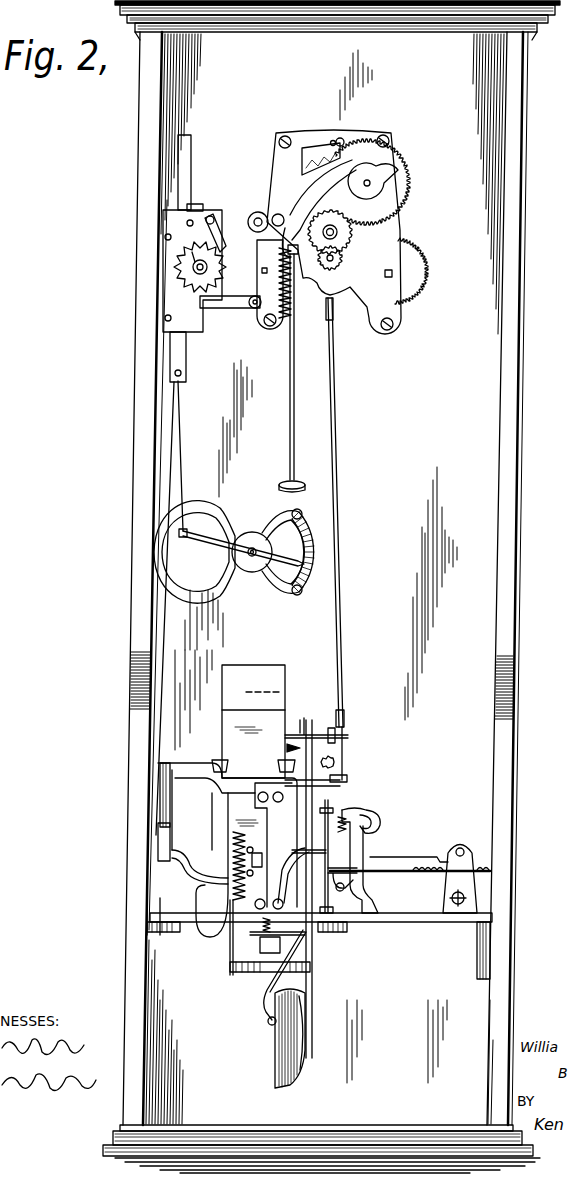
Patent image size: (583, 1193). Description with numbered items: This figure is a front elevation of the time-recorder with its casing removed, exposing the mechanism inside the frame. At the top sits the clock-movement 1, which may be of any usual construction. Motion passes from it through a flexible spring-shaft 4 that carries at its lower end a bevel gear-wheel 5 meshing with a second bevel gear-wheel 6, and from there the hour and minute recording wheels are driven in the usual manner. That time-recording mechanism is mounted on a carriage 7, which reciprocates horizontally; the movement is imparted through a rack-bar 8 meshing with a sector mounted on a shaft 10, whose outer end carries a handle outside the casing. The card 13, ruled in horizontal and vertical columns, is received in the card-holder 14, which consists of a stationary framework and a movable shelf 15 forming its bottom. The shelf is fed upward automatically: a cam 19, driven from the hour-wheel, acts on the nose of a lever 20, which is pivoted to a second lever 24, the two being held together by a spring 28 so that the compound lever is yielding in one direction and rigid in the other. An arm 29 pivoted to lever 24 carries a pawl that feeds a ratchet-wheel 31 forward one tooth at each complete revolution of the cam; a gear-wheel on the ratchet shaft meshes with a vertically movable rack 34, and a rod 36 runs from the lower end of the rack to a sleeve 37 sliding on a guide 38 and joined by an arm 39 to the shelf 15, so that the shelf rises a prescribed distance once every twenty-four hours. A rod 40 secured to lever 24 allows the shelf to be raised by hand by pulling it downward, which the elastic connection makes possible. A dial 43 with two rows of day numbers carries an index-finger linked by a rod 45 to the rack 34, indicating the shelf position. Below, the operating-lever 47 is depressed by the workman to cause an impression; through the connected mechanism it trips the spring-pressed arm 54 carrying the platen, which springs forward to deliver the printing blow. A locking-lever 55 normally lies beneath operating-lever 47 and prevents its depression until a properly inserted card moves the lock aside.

The clock-movement 1 is at (368, 257).
The flexible spring-shaft 4 is at (337, 486).
The bevel gear-wheel 5 is at (348, 779).
The bevel gear-wheel 6 is at (336, 768).
The carriage 7 is at (304, 828).
The rack-bar 8 is at (405, 863).
The shaft 10 is at (460, 879).
The card 13 is at (253, 721).
The card-holder 14 is at (214, 803).
The shelf 15 is at (268, 874).
The cam 19 is at (372, 182).
The lever 20 is at (334, 232).
The lever 24 is at (256, 227).
The spring 28 is at (291, 278).
The arm 29 is at (232, 308).
The ratchet-wheel 31 is at (194, 268).
The rack 34 is at (185, 158).
The rod 36 is at (160, 627).
The sleeve 37 is at (170, 832).
The guide 38 is at (171, 800).
The arm 39 is at (250, 847).
The rod 40 is at (290, 431).
The dial 43 is at (299, 521).
The rod 45 is at (182, 470).
The operating-lever 47 is at (347, 820).
The arm 54 is at (247, 815).
The locking-lever 55 is at (357, 845).